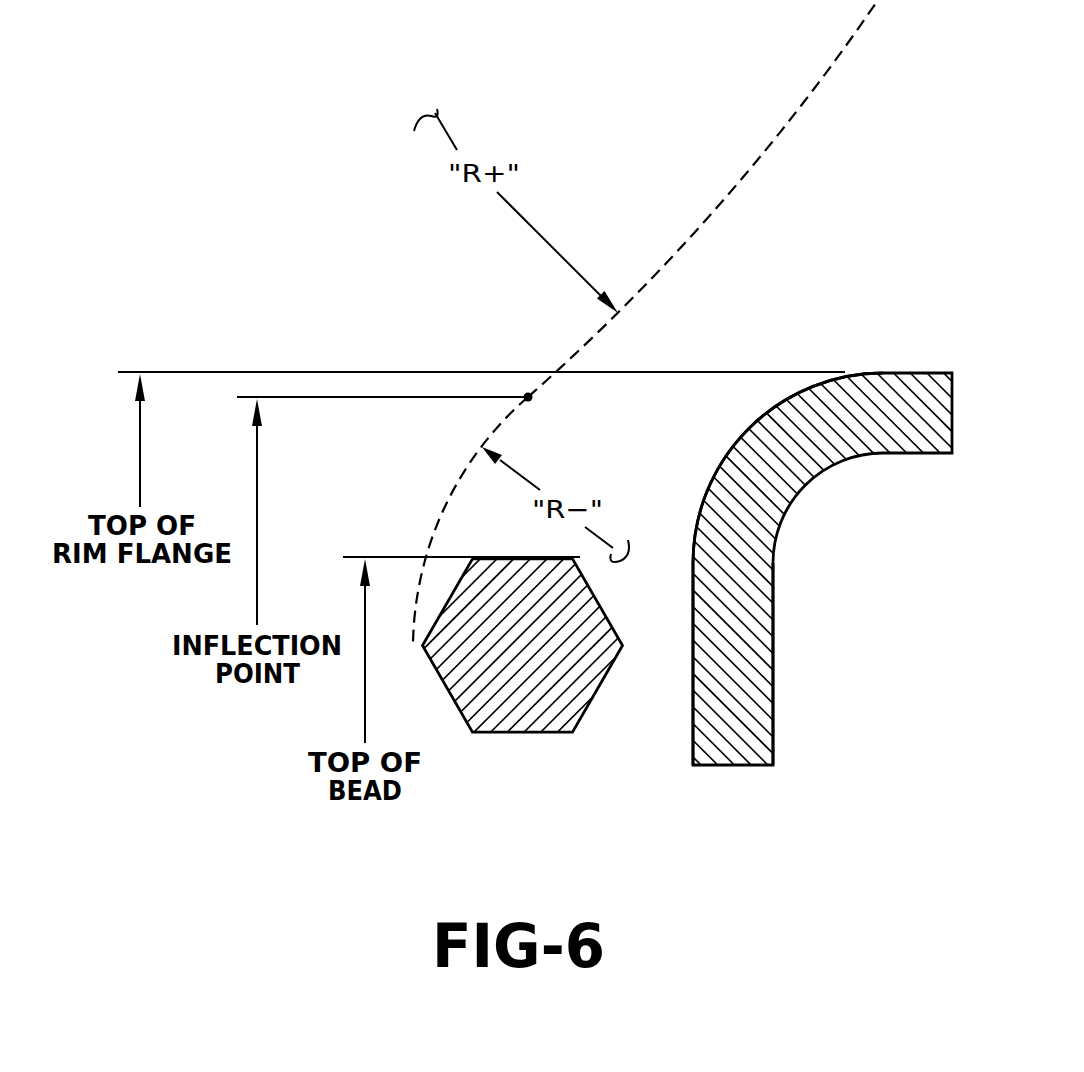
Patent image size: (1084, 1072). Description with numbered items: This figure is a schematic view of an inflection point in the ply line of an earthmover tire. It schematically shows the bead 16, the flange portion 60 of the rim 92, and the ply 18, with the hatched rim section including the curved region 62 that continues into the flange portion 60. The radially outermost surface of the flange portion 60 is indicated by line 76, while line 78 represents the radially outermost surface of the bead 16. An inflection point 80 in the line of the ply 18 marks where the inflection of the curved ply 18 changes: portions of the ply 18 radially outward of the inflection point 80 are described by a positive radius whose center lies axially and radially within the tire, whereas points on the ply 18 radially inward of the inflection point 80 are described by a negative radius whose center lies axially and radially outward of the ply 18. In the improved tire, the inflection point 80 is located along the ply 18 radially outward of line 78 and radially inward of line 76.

The bead 16 is at (582, 717).
The ply 18 is at (740, 177).
The flange portion 60 is at (775, 618).
The rim flange curved portion 62 is at (743, 465).
The line 76 is at (173, 371).
The line 78 is at (387, 556).
The inflection point 80 is at (527, 395).
The rim 92 is at (740, 705).